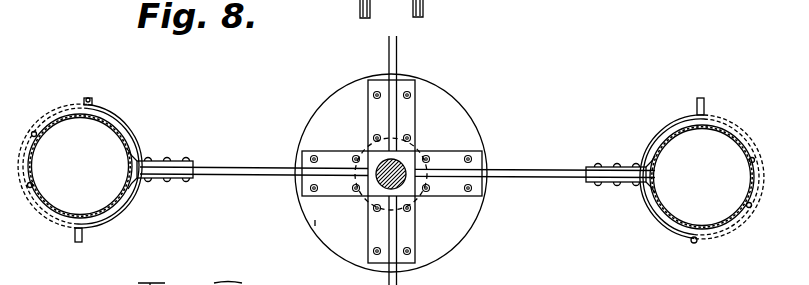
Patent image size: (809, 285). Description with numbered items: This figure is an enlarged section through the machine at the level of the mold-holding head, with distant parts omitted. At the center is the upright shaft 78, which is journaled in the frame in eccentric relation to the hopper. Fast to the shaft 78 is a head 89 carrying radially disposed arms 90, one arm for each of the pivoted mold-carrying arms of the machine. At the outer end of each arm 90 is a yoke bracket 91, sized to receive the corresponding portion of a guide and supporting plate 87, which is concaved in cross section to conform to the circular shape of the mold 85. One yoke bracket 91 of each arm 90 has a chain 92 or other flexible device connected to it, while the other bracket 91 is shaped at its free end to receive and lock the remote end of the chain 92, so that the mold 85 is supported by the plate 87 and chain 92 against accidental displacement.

The upright shaft 78 is at (408, 158).
The mold 85 is at (60, 216).
The guide and supporting plate 87 is at (124, 126).
The head 89 is at (443, 95).
The radially disposed arm 90 is at (397, 52).
The yoke bracket 91 is at (140, 143).
The chain 92 is at (37, 219).